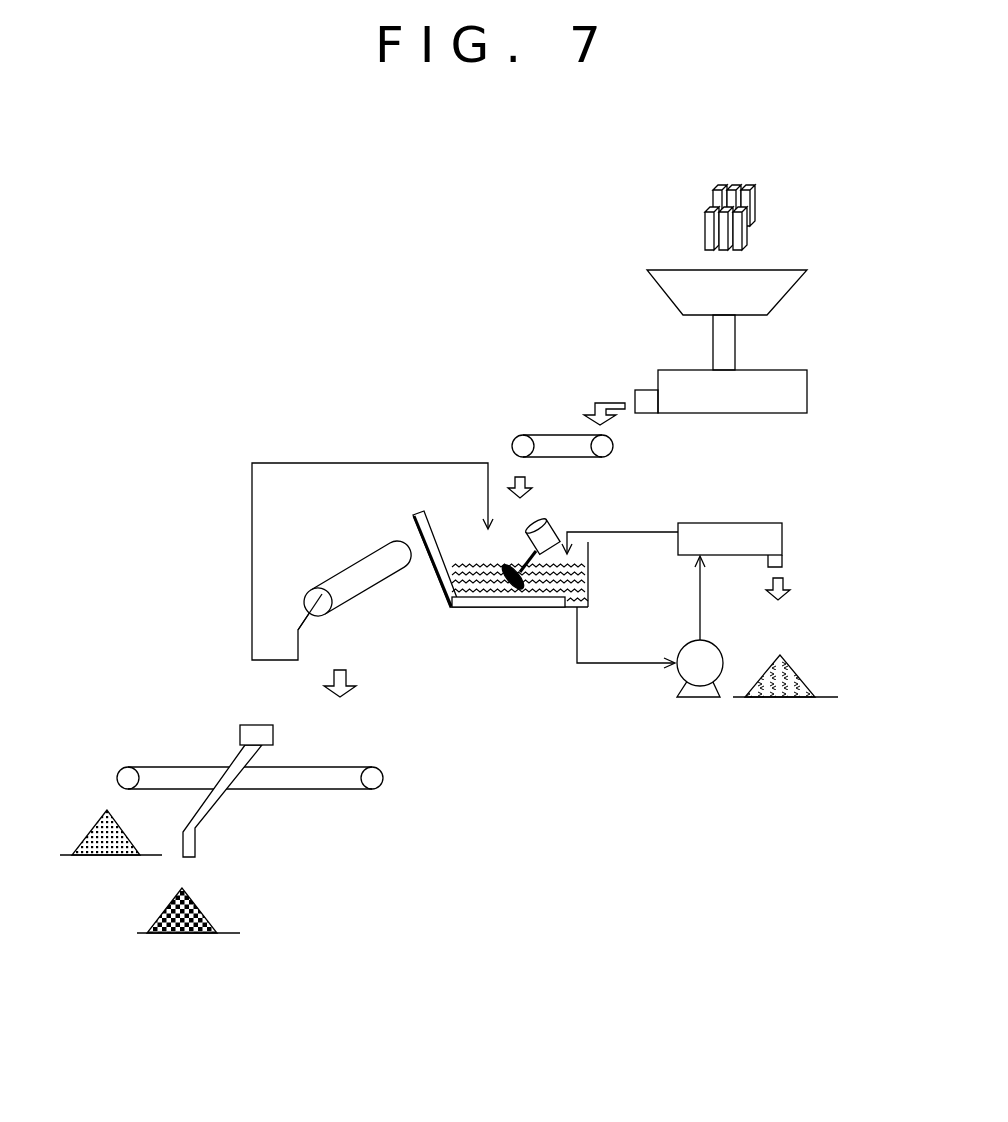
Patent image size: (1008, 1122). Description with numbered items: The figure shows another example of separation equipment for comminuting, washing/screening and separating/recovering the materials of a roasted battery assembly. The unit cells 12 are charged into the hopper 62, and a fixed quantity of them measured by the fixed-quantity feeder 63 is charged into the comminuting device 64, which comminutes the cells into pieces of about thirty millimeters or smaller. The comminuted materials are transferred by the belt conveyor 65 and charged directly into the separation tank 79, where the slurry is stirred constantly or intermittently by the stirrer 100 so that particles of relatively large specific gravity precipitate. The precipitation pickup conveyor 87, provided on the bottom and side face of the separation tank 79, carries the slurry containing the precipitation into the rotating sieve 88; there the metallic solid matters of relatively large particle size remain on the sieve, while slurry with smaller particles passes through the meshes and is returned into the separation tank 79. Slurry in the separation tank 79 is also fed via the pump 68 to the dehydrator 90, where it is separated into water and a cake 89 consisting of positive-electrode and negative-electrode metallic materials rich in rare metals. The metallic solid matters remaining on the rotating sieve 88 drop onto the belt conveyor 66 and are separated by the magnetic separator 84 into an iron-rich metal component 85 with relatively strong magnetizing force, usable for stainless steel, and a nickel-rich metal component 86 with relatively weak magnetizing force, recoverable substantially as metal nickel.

The unit cells 12 is at (750, 197).
The hopper 62 is at (800, 285).
The fixed-quantity feeder 63 is at (735, 340).
The comminuting device 64 is at (807, 390).
The belt conveyor 65 is at (535, 435).
The stirrer 100 is at (552, 527).
The rotating sieve 88 is at (355, 562).
The precipitation pickup conveyor 87 is at (430, 562).
The separation tank 79 is at (590, 597).
The dehydrator 90 is at (782, 542).
The cake 89 is at (793, 667).
The pump 68 is at (688, 697).
The magnetic separator 84 is at (253, 725).
The belt conveyor 66 is at (158, 767).
The nickel-rich metal component 86 is at (102, 815).
The iron-rich metal component 85 is at (197, 900).